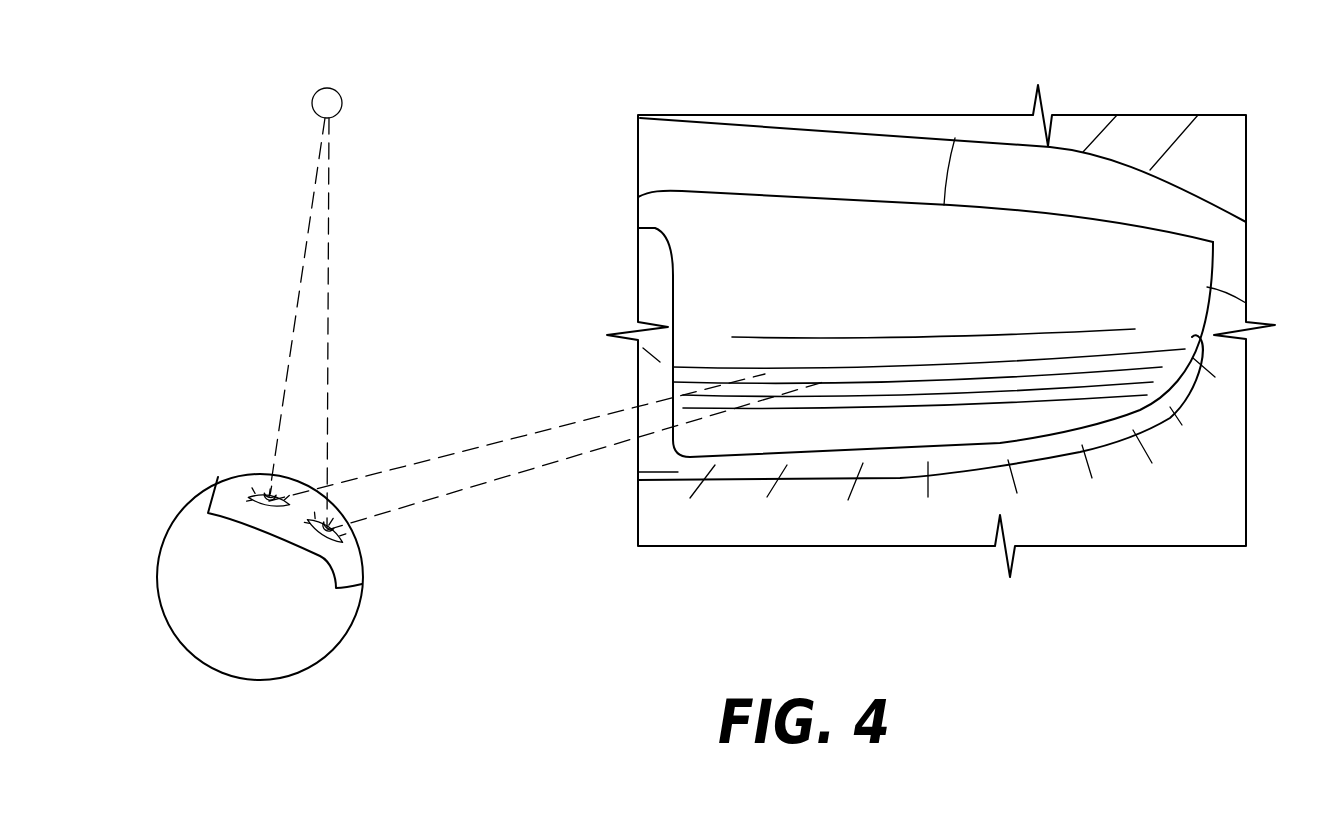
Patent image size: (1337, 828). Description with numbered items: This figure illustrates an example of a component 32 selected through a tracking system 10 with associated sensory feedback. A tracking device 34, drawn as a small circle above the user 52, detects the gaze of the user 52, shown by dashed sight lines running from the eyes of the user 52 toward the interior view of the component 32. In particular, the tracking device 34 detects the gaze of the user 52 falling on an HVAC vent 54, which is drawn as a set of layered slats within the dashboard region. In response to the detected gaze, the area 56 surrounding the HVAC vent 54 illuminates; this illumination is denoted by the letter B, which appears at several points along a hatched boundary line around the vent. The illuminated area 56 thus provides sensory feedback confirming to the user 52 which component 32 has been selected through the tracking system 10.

The tracking system 10 is at (264, 70).
The tracking device 34 is at (328, 90).
The user 52 is at (363, 578).
The HVAC vent 54 is at (682, 397).
The area surrounding the HVAC vent 56 is at (1183, 383).
The component 32 is at (1040, 556).
The illumination B is at (660, 472).